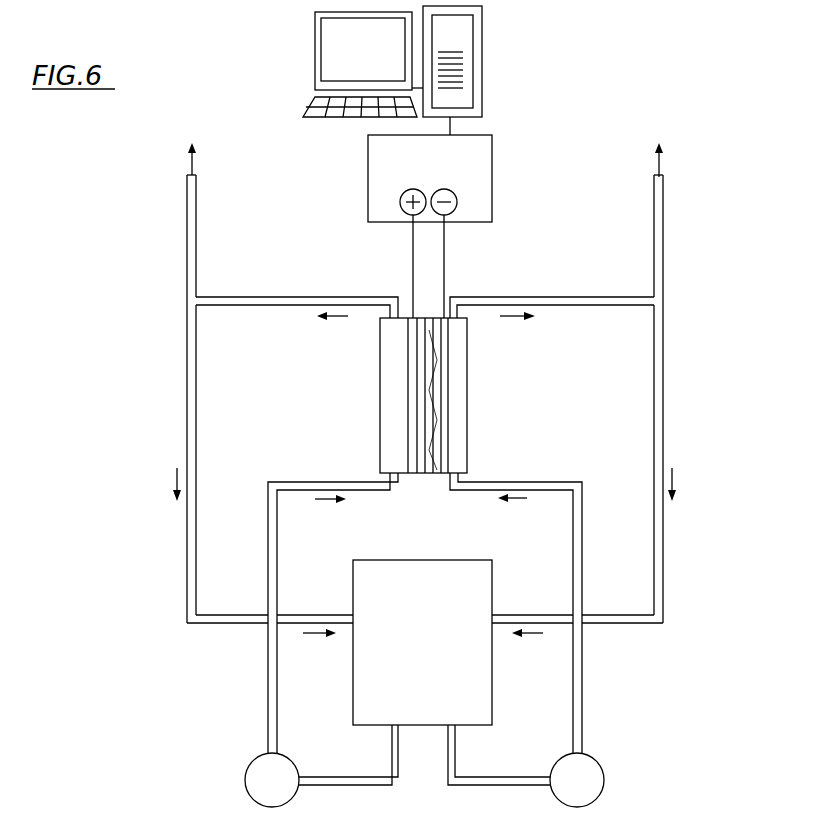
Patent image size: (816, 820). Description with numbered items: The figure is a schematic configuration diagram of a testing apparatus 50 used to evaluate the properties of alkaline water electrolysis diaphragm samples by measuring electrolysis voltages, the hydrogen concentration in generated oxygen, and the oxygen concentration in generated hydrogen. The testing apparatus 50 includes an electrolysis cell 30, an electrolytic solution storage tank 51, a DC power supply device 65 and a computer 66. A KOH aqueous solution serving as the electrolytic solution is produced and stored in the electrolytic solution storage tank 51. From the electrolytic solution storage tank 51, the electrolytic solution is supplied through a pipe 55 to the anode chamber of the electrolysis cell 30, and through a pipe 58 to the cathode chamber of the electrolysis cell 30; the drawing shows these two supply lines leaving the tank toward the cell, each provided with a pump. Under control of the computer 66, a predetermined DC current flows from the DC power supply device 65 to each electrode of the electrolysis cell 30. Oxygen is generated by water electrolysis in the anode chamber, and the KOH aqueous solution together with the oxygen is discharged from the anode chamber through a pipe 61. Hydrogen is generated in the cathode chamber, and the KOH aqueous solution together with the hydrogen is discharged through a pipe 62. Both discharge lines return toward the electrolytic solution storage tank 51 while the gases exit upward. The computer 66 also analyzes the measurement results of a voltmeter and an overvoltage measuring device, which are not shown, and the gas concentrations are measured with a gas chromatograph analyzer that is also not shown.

The computer 66 is at (498, 63).
The DC power supply device 65 is at (492, 187).
The testing apparatus 50 is at (125, 311).
The pipe 61 is at (263, 297).
The pipe 62 is at (565, 297).
The electrolysis cell 30 is at (425, 476).
The electrolytic solution storage tank 51 is at (437, 657).
The pipe 55 is at (267, 673).
The pipe 58 is at (583, 702).